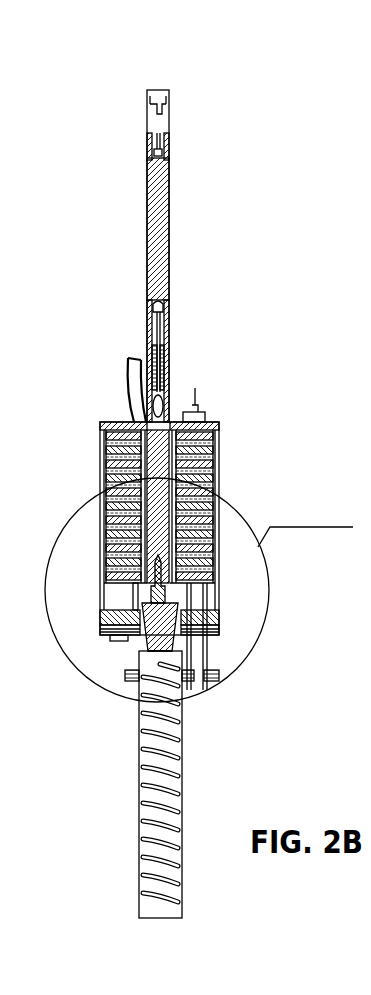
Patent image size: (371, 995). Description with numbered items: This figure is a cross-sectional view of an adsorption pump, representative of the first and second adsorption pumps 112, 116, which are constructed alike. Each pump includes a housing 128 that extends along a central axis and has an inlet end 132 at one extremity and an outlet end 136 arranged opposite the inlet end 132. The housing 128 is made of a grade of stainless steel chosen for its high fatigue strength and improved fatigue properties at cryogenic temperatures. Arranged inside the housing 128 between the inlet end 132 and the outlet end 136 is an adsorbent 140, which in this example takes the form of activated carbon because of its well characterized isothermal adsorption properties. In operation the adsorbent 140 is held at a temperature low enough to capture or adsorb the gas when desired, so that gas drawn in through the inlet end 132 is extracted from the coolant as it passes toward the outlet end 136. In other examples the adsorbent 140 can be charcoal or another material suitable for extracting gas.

The first adsorption pump 112 is at (185, 503).
The second adsorption pump 116 is at (185, 503).
The housing 128 is at (95, 480).
The inlet end 132 is at (162, 90).
The outlet end 136 is at (160, 920).
The adsorbent 140 is at (200, 471).